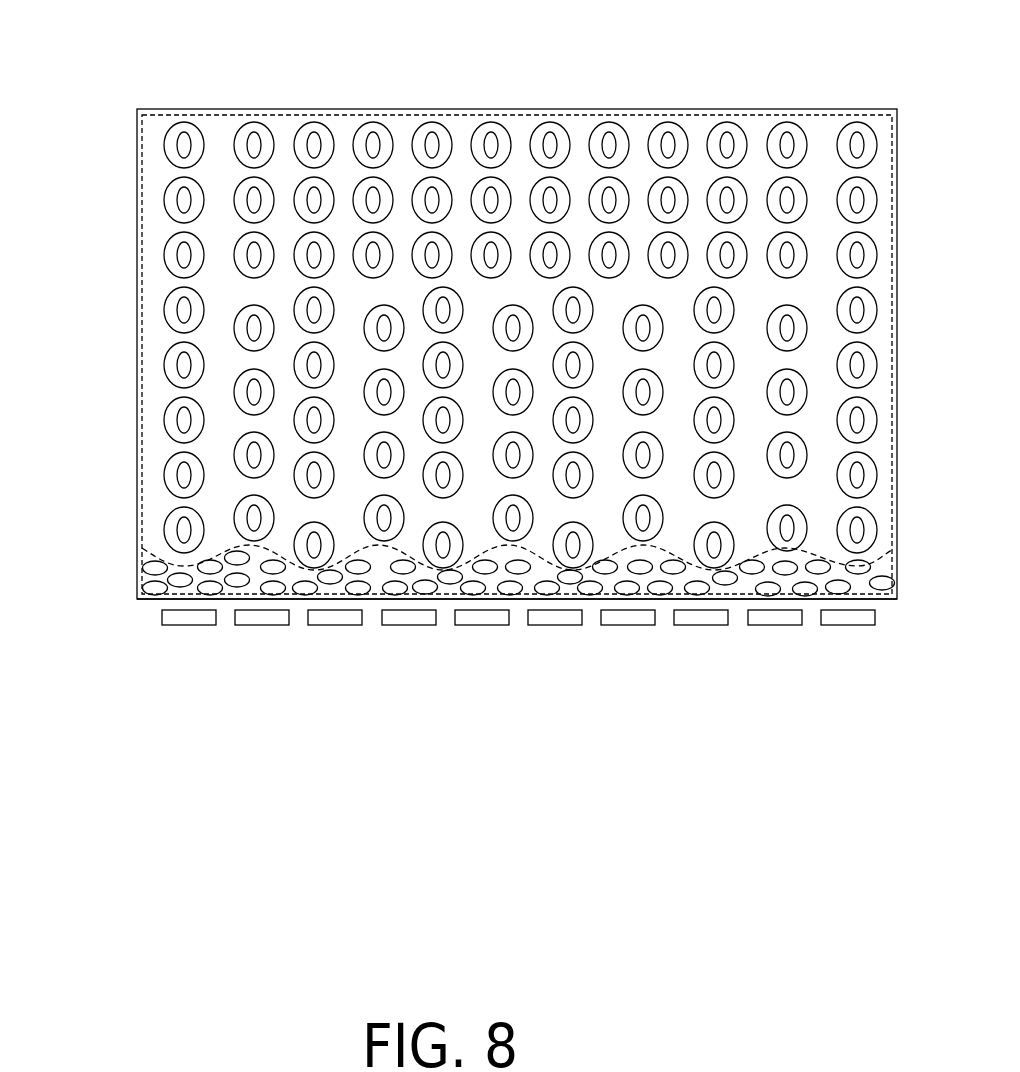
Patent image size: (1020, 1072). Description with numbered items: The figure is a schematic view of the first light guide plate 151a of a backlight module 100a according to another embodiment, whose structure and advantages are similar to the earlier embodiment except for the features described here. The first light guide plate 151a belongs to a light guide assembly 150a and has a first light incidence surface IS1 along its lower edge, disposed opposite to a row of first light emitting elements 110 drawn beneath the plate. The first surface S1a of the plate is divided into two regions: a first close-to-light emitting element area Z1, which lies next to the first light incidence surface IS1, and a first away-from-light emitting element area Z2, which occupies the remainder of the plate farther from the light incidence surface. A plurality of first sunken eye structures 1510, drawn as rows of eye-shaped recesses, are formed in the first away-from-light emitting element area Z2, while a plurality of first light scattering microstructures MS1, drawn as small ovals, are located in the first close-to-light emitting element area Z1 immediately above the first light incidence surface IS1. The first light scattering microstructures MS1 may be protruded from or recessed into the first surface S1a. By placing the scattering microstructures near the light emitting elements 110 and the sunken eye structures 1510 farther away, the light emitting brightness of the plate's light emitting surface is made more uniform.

The backlight module 100a is at (97, 26).
The first light guide plate 151a is at (517, 321).
The light guide assembly 150a is at (222, 109).
The first sunken eye structure 1510 is at (430, 128).
The first surface S1a is at (70, 510).
The first away-from-light emitting element area Z2 is at (137, 503).
The first close-to-light emitting element area Z1 is at (137, 570).
The first light scattering microstructure MS1 is at (735, 585).
The first light emitting element 110 is at (845, 627).
The first light incidence surface IS1 is at (886, 601).